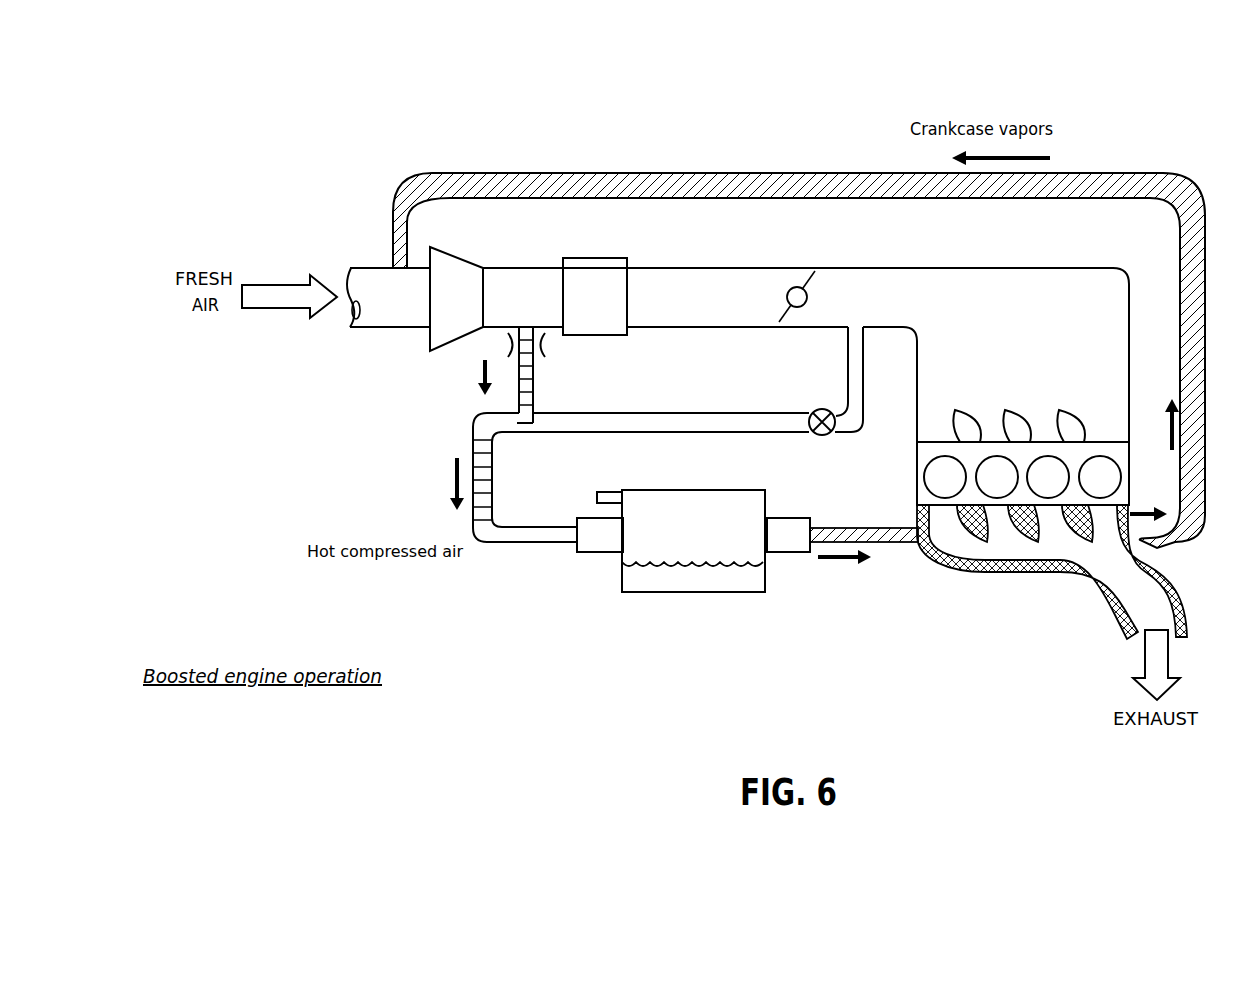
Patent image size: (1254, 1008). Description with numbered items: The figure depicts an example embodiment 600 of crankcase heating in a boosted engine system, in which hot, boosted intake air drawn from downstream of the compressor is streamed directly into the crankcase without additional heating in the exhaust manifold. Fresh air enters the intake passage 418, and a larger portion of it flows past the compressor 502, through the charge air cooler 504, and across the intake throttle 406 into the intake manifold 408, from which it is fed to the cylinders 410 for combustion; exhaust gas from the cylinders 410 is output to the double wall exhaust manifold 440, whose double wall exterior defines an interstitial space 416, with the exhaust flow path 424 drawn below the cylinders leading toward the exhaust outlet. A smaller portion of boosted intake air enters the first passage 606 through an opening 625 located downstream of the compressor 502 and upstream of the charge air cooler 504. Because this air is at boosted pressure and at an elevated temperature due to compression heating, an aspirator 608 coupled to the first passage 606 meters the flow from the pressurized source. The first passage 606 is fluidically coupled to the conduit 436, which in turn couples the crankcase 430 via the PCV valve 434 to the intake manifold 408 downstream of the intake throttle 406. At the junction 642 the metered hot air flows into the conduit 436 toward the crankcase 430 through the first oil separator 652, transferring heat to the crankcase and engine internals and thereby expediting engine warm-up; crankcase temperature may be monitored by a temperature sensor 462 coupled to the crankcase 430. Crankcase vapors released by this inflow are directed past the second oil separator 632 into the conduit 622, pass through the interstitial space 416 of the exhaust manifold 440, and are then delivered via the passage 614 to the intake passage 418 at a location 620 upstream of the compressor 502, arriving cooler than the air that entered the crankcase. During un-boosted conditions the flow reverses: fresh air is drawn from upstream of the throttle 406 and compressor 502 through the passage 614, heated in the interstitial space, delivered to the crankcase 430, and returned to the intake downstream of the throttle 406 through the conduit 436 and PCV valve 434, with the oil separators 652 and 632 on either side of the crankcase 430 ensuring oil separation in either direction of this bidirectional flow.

The embodiment of crankcase heating in a boosted engine system 600 is at (195, 68).
The passage 614 is at (600, 175).
The location 620 is at (388, 262).
The opening 625 is at (527, 323).
The compressor 502 is at (456, 299).
The charge air cooler 504 is at (595, 296).
The intake throttle 406 is at (788, 300).
The intake manifold 408 is at (1130, 312).
The intake passage 418 is at (391, 331).
The junction 642 is at (509, 407).
The aspirator 608 is at (545, 345).
The first passage 606 is at (535, 368).
The PCV valve 434 is at (833, 433).
The conduit 436 is at (492, 466).
The temperature sensor 462 is at (607, 490).
The crankcase 430 is at (693, 541).
The first oil separator 652 is at (600, 535).
The second oil separator 632 is at (788, 535).
The cylinders 410 is at (994, 438).
The conduit 622 is at (905, 545).
The exhaust manifold passage 424 is at (973, 586).
The interstitial space 416 is at (1033, 571).
The double wall exhaust manifold 440 is at (1184, 596).